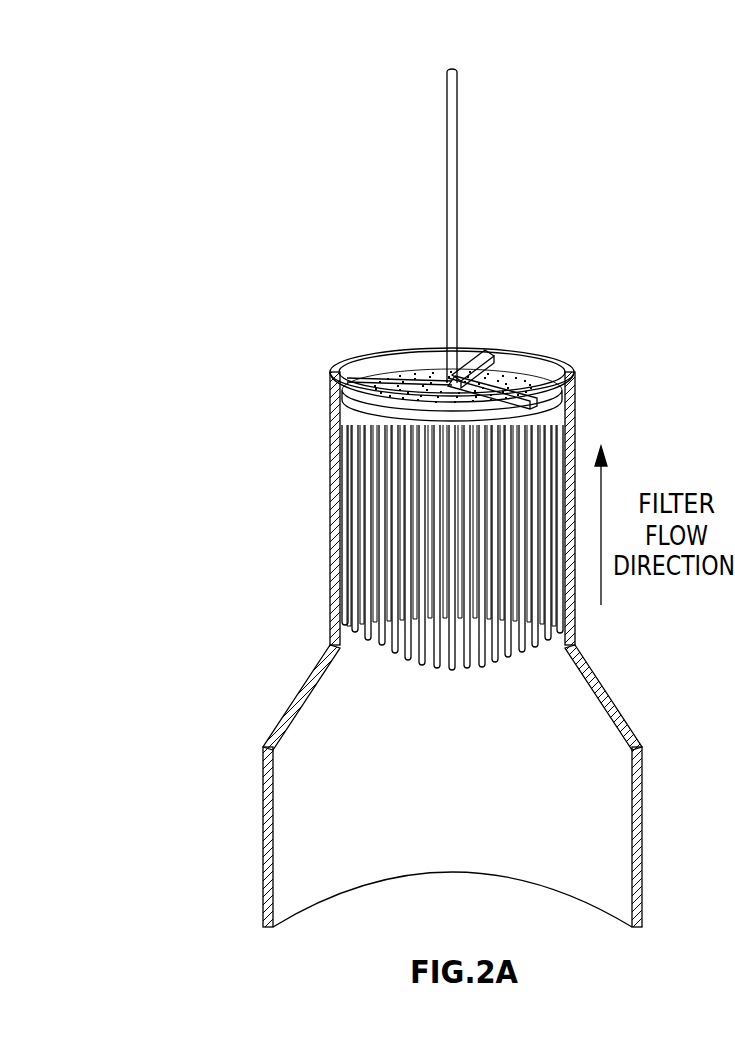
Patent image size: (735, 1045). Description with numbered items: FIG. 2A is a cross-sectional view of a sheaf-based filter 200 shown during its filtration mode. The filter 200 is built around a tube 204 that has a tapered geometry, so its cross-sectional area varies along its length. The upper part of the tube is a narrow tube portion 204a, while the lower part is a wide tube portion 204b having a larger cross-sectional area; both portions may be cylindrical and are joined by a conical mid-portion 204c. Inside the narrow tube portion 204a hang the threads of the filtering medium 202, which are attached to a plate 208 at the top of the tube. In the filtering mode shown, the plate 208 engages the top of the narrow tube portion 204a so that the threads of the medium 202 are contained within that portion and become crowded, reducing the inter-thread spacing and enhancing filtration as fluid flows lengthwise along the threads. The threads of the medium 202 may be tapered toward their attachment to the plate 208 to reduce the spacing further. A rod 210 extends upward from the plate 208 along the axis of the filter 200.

The filter 200 is at (293, 120).
The medium 202 is at (470, 624).
The tube 204 is at (193, 372).
The narrow tube portion 204a is at (314, 515).
The wide tube portion 204b is at (249, 811).
The conical mid-portion 204c is at (304, 680).
The plate 208 is at (568, 398).
The support rod 210 is at (445, 203).